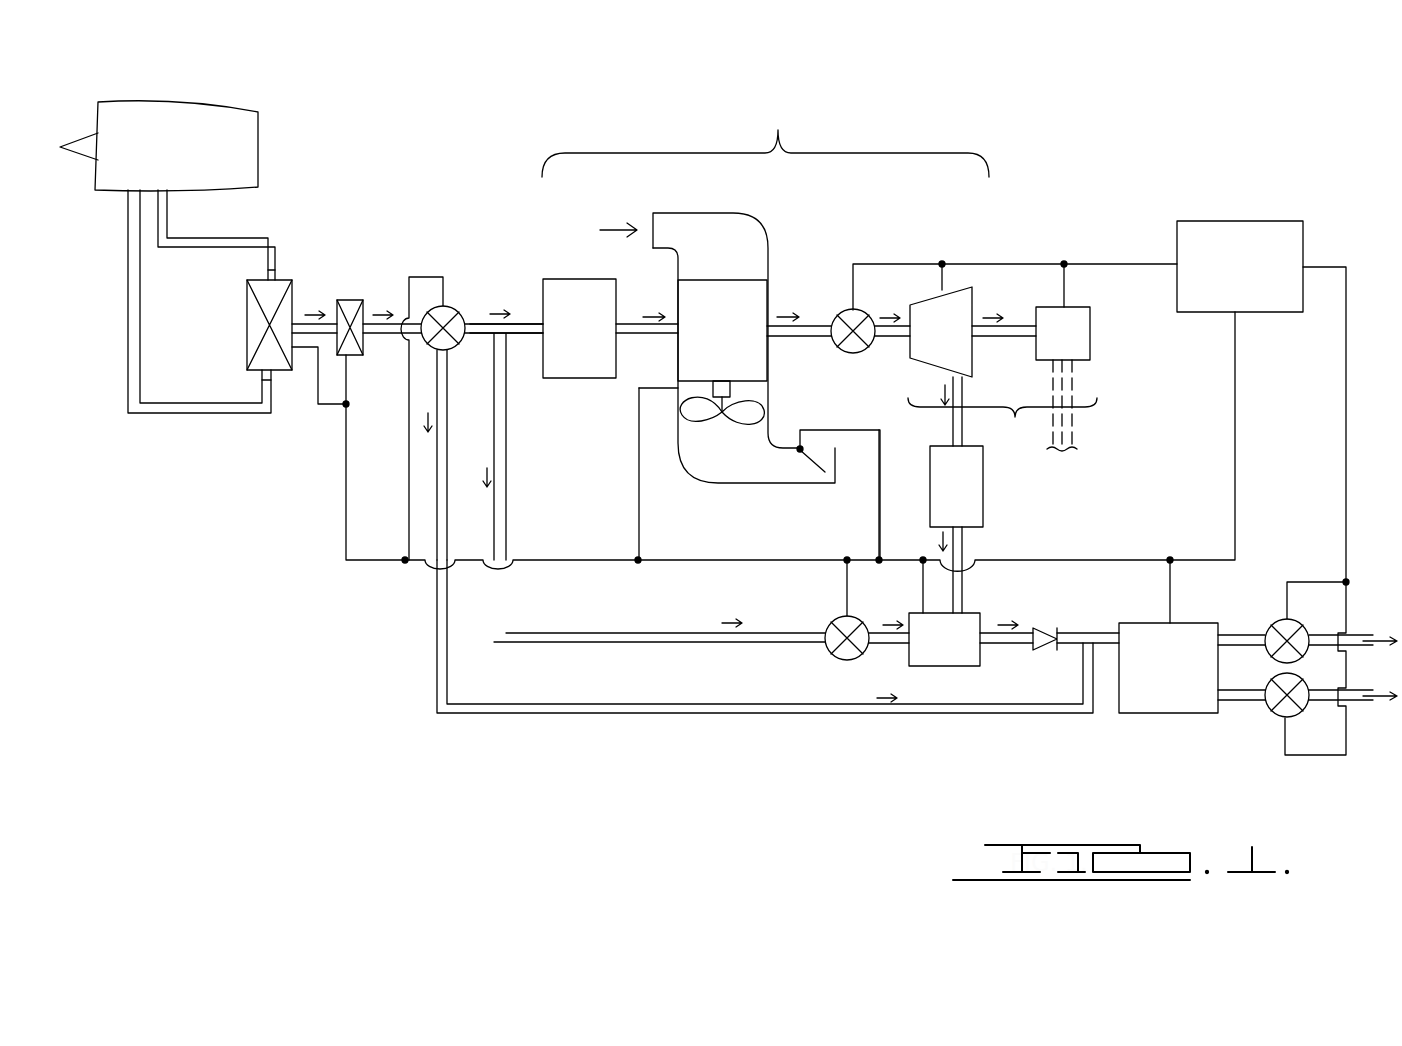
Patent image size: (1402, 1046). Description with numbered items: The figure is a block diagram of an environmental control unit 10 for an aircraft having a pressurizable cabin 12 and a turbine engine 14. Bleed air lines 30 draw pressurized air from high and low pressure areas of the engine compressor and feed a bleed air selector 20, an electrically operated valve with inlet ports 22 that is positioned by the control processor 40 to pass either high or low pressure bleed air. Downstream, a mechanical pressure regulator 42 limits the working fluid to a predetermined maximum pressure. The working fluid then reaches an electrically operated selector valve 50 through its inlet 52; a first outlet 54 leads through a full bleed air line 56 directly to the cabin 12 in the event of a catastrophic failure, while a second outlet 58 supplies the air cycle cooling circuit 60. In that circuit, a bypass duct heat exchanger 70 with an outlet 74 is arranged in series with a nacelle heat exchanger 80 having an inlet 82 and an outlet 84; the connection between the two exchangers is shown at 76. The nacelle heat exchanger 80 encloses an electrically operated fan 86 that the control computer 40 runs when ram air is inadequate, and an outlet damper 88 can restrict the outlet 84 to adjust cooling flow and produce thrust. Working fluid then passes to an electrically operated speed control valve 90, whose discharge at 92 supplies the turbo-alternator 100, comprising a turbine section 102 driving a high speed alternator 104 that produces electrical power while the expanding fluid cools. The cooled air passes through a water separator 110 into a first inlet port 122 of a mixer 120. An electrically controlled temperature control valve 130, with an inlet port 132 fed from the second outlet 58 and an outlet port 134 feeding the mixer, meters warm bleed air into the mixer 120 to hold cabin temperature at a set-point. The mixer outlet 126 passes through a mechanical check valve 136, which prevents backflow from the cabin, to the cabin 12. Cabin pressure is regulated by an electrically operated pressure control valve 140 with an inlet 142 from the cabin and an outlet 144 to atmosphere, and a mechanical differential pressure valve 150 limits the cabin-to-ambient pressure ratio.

The environmental control unit 10 is at (1145, 164).
The cabin 12 is at (1145, 713).
The turbine engine 14 is at (248, 125).
The bleed air selector 20 is at (247, 323).
The inlet ports 22 is at (273, 280).
The bleed air lines 30 is at (270, 237).
The control processor 40 is at (1268, 220).
The mechanical pressure regulator 42 is at (352, 297).
The selector valve 50 is at (453, 306).
The inlet 52 is at (420, 320).
The first outlet 54 is at (442, 350).
The full bleed air line 56 is at (857, 717).
The second outlet 58 is at (473, 334).
The air cycle cooling circuit 60 is at (765, 135).
The bypass duct heat exchanger 70 is at (556, 378).
The outlet 74 is at (543, 323).
The duct heat exchanger outlet 76 is at (617, 326).
The nacelle heat exchanger 80 is at (770, 283).
The inlet 82 is at (677, 338).
The outlet 84 is at (770, 338).
The electrically operated fan 86 is at (694, 422).
The outlet damper 88 is at (813, 463).
The speed control valve 90 is at (862, 313).
The valve outlet conduit 92 is at (876, 342).
The turbo-alternator 100 is at (1042, 330).
The turbine section 102 is at (968, 287).
The high speed alternator 104 is at (1090, 343).
The water separator 110 is at (983, 490).
The mixer 120 is at (953, 665).
The first inlet port 122 is at (960, 613).
The outlet 126 is at (987, 633).
The temperature control valve 130 is at (835, 615).
The inlet port 132 is at (820, 647).
The outlet port 134 is at (873, 628).
The mechanical check valve 136 is at (1042, 628).
The pressure control valve 140 is at (1297, 612).
The inlet 142 is at (1265, 633).
The outlet 144 is at (1310, 640).
The differential pressure valve 150 is at (1272, 713).